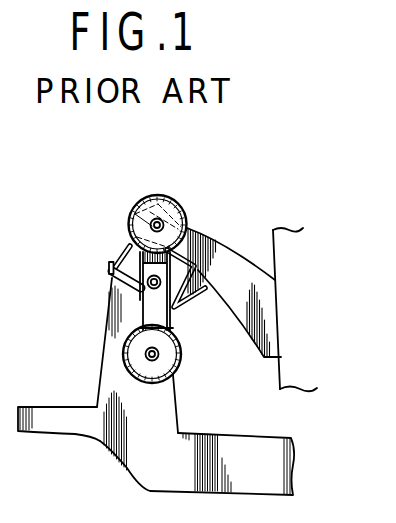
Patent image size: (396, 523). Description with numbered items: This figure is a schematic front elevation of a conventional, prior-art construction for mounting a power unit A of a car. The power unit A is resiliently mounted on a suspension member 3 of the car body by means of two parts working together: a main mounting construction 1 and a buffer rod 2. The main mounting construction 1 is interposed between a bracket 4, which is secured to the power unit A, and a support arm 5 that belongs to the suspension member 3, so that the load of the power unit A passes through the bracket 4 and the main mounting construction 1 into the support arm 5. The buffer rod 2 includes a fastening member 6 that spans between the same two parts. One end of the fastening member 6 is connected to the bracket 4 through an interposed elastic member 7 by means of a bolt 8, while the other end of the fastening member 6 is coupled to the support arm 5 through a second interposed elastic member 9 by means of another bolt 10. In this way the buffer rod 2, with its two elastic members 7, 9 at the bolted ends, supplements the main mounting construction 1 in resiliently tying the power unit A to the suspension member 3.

The main mounting construction 1 is at (125, 247).
The buffer rod 2 is at (136, 327).
The suspension member 3 is at (253, 450).
The bracket 4 is at (237, 257).
The support arm 5 is at (113, 378).
The fastening member 6 is at (150, 314).
The elastic member 7 is at (166, 210).
The bolt 8 is at (152, 217).
The elastic member 9 is at (157, 377).
The bolt 10 is at (148, 364).
The power unit A is at (299, 364).